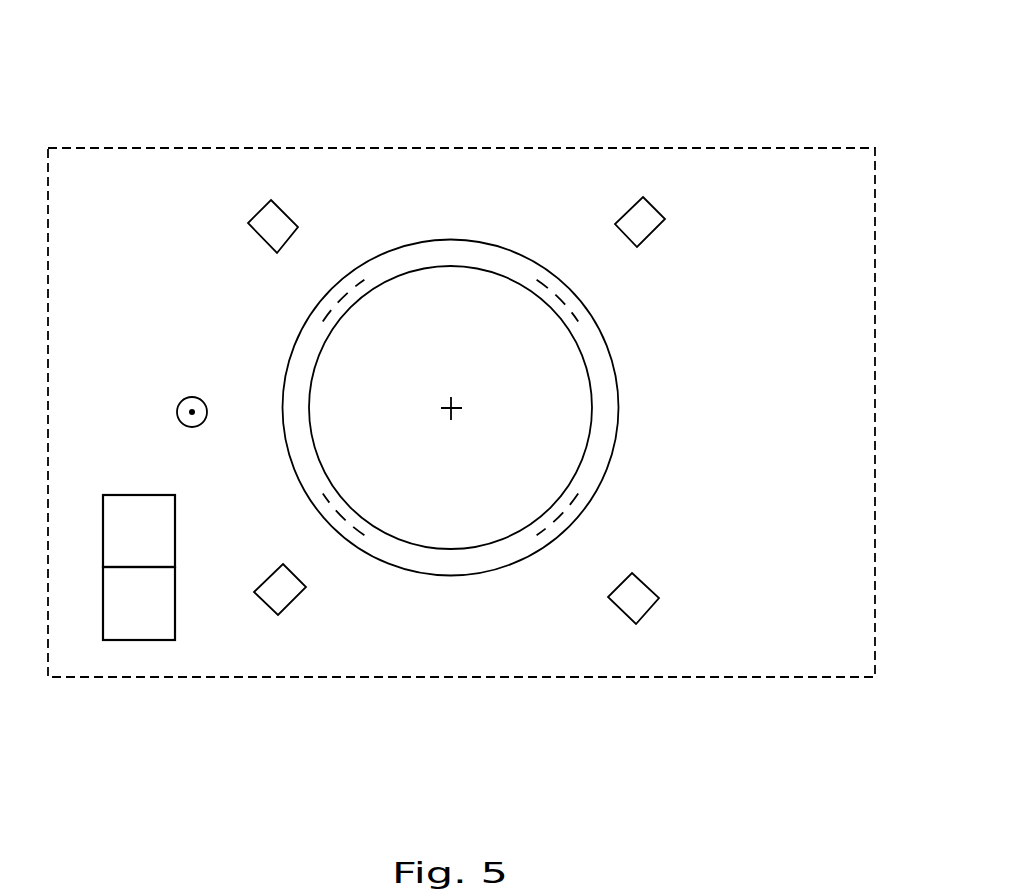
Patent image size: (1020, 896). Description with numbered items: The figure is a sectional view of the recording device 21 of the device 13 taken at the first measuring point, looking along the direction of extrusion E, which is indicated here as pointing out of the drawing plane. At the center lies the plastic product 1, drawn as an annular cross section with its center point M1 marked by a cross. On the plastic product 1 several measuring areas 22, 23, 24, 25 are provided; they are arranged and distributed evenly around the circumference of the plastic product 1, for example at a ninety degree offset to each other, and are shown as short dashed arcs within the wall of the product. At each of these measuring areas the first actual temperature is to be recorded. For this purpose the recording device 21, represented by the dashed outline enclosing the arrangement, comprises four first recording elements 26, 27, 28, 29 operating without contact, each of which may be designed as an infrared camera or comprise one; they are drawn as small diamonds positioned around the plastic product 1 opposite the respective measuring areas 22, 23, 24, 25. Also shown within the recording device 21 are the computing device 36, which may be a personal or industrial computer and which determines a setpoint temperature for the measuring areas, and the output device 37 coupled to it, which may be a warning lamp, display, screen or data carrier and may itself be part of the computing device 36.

The device 13 is at (456, 100).
The recording device 21 is at (798, 147).
The plastic product 1 is at (464, 232).
The center point of ring M1 is at (452, 410).
The measuring area 22 is at (348, 298).
The measuring area 23 is at (368, 538).
The measuring area 24 is at (577, 492).
The measuring area 25 is at (556, 300).
The first recording element 26 is at (252, 220).
The first recording element 27 is at (258, 600).
The first recording element 28 is at (645, 585).
The first recording element 29 is at (652, 204).
The direction of extrusion E is at (177, 412).
The computing device 36 is at (159, 621).
The output device 37 is at (159, 549).